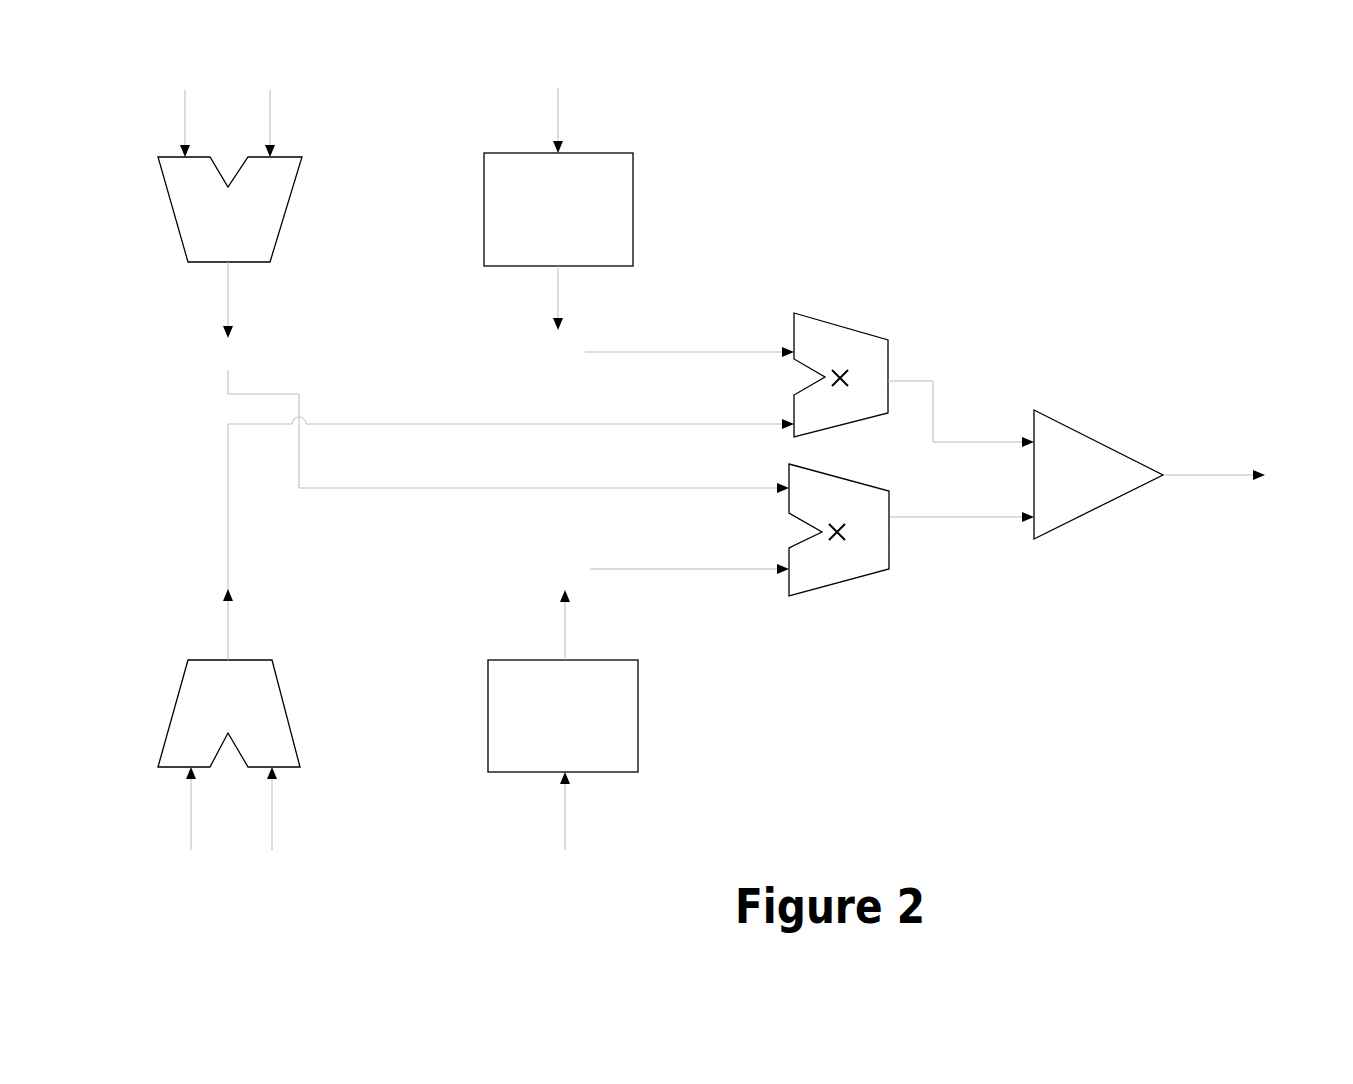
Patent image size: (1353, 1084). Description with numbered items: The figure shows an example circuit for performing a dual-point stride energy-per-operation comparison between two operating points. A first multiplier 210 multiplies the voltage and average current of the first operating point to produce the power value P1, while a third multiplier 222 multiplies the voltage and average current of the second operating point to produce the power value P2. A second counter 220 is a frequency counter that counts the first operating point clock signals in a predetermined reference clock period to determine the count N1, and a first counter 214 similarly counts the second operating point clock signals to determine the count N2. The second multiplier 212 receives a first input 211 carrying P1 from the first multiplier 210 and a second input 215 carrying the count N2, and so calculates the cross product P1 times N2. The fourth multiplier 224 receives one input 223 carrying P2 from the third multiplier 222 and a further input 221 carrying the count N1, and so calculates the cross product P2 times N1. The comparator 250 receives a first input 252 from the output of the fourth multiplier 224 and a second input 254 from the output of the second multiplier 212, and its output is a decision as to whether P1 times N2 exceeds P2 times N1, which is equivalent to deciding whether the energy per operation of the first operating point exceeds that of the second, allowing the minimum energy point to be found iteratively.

The first multiplier 210 is at (177, 231).
The second counter 220 is at (633, 212).
The further input 221 is at (683, 352).
The input 223 is at (703, 424).
The fourth multiplier 224 is at (878, 338).
The first input 211 is at (660, 488).
The first input 252 is at (975, 440).
The comparator 250 is at (1075, 428).
The second input 254 is at (1005, 520).
The second multiplier 212 is at (838, 598).
The second input 215 is at (698, 572).
The first counter 214 is at (638, 735).
The third multiplier 222 is at (282, 694).